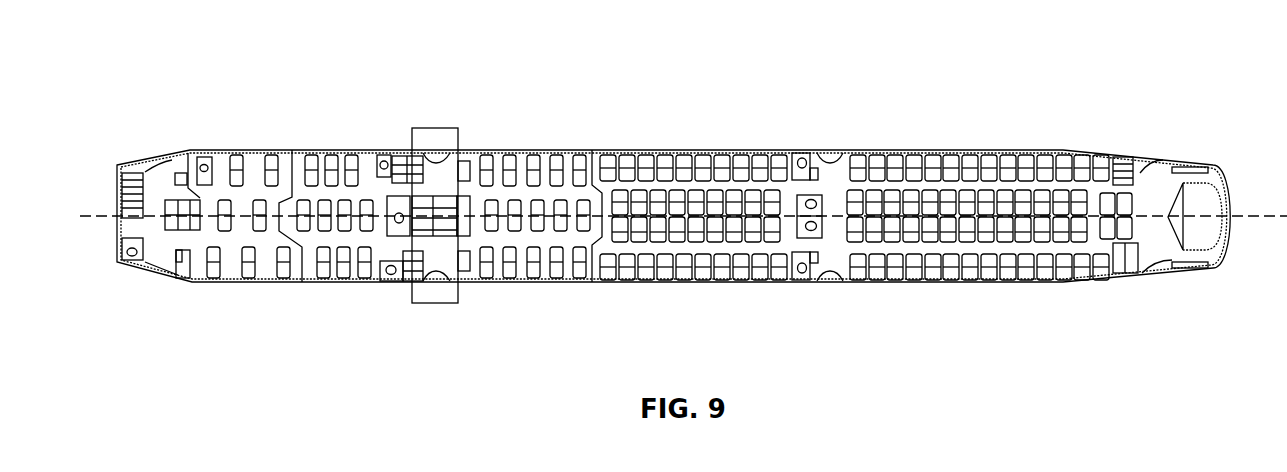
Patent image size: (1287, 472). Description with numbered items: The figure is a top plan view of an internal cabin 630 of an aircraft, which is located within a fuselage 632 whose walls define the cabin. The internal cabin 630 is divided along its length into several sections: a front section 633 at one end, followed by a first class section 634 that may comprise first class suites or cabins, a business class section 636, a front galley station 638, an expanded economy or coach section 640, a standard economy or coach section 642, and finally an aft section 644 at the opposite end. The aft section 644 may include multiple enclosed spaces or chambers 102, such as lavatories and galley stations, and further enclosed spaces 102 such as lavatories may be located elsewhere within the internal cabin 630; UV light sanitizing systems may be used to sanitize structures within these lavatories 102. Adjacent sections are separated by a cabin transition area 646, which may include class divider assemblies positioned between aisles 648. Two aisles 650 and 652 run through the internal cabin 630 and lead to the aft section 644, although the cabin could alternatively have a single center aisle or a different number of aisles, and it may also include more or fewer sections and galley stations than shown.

The internal cabin 630 is at (246, 62).
The fuselage 632 is at (547, 80).
The front section 633 is at (172, 294).
The first class section 634 is at (257, 283).
The business class section 636 is at (322, 150).
The front galley station 638 is at (445, 305).
The expanded economy or coach section 640 is at (530, 283).
The standard economy or coach section 642 is at (650, 150).
The aft section 644 is at (1160, 173).
The cabin transition area 646 is at (185, 150).
The aisles 648 is at (423, 187).
The aisle 650 is at (968, 185).
The aisle 652 is at (985, 250).
The enclosed space 102 is at (398, 212).